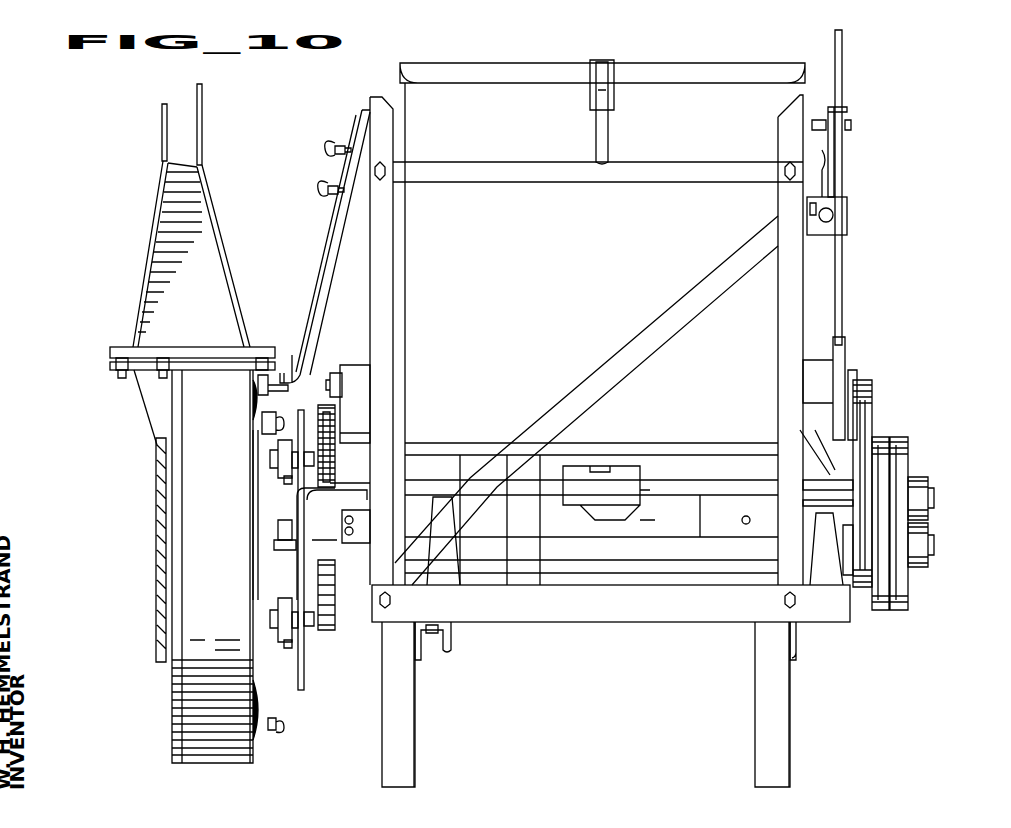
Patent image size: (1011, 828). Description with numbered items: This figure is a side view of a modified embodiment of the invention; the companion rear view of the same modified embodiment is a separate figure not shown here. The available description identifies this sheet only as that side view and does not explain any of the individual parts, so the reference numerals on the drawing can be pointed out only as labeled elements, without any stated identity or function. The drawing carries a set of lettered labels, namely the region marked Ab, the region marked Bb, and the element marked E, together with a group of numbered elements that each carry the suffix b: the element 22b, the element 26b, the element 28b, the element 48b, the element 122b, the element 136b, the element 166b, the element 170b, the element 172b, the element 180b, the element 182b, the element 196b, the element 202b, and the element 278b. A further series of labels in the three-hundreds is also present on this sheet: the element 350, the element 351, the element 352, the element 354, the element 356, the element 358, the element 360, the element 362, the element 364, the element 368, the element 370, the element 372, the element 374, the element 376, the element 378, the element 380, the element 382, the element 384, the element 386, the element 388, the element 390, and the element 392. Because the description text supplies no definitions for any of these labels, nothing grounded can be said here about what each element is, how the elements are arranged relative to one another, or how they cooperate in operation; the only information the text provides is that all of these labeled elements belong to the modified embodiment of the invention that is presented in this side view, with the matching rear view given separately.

The control rod 122b is at (843, 43).
The drive mechanism 350 is at (872, 165).
The right frame post Ab is at (795, 294).
The box body Bb is at (599, 322).
The left frame post 26b is at (393, 273).
The bearing bracket 48b is at (365, 396).
The feed chute 278b is at (145, 290).
The platform plate 182b is at (190, 360).
The hook end 386 is at (290, 353).
The pivot block 388 is at (258, 385).
The clip 202b is at (270, 422).
The hub 364 is at (278, 452).
The flange 358 is at (290, 470).
The spacer 360 is at (300, 462).
The washer 356 is at (290, 478).
The side plate 196b is at (256, 512).
The collar 362 is at (283, 546).
The shaft 170b is at (340, 540).
The bearing block 136b is at (330, 578).
The sprocket 172b is at (345, 485).
The guide plate 166b is at (302, 680).
The elevator belt E is at (172, 682).
The drum 180b is at (172, 720).
The wing nut 390 is at (363, 124).
The wing nut 392 is at (325, 190).
The lever arm 382 is at (332, 229).
The lever arm edge 384 is at (332, 265).
The bracket 378 is at (347, 490).
The cross rail 376 is at (650, 447).
The bracket 28b is at (360, 500).
The motor housing 368 is at (624, 520).
The base beam 22b is at (611, 603).
The pulley 372 is at (930, 546).
The pulley 370 is at (930, 496).
The gear 374 is at (905, 461).
The sprocket 380 is at (870, 406).
The leg bracket 354 is at (422, 653).
The leg 351 is at (412, 701).
The leg edge 352 is at (400, 735).